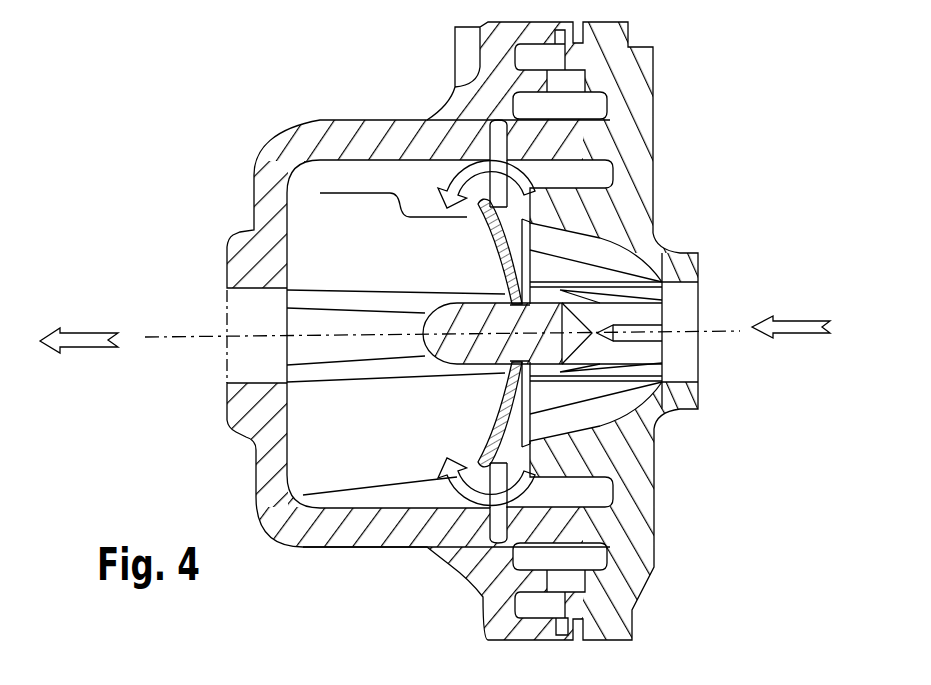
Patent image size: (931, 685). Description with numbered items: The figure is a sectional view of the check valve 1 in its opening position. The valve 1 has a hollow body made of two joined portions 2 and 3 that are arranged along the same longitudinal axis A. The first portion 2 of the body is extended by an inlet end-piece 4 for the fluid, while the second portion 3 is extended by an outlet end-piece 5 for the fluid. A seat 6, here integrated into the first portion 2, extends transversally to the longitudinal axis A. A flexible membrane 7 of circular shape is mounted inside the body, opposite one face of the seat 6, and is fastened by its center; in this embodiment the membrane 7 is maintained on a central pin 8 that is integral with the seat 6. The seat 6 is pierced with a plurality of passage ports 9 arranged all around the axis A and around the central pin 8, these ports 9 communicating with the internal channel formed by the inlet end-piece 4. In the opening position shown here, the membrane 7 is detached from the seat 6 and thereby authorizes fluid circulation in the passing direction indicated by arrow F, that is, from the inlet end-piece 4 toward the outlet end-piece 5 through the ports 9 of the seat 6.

The check valve 1 is at (257, 128).
The first portion of the body 2 is at (627, 572).
The second portion of the body 3 is at (312, 537).
The inlet end-piece 4 is at (683, 270).
The outlet end-piece 5 is at (241, 410).
The seat 6 is at (563, 455).
The flexible membrane 7 is at (480, 440).
The central pin 8 is at (479, 370).
The passage ports 9 is at (600, 243).
The longitudinal axis A is at (158, 337).
The passing direction arrow F is at (440, 186).